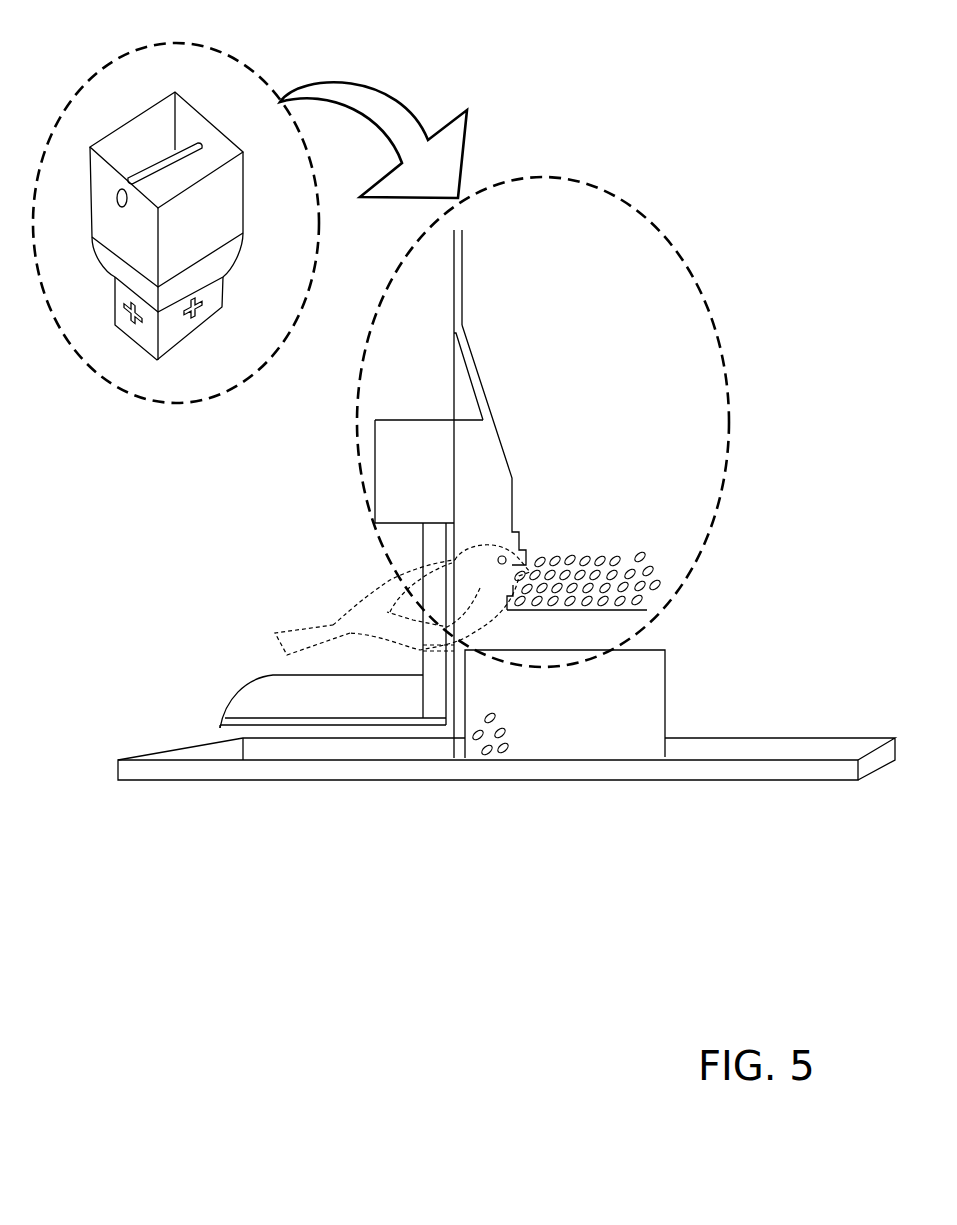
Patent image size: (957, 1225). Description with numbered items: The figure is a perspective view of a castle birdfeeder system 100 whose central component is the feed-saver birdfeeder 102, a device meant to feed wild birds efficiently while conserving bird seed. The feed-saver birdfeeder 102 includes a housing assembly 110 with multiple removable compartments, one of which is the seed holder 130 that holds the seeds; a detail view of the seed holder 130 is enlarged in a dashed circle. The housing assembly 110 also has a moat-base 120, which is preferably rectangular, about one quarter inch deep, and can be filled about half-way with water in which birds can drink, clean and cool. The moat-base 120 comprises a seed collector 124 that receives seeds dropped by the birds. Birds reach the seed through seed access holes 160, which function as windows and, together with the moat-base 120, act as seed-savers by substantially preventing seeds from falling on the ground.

The castle birdfeeder system 100 is at (675, 170).
The feed-saver birdfeeder 102 is at (695, 232).
The housing assembly 110 is at (722, 287).
The moat-base 120 is at (203, 752).
The seed collector 124 is at (642, 695).
The seed holder 130 is at (201, 108).
The seed access holes 160 is at (426, 555).